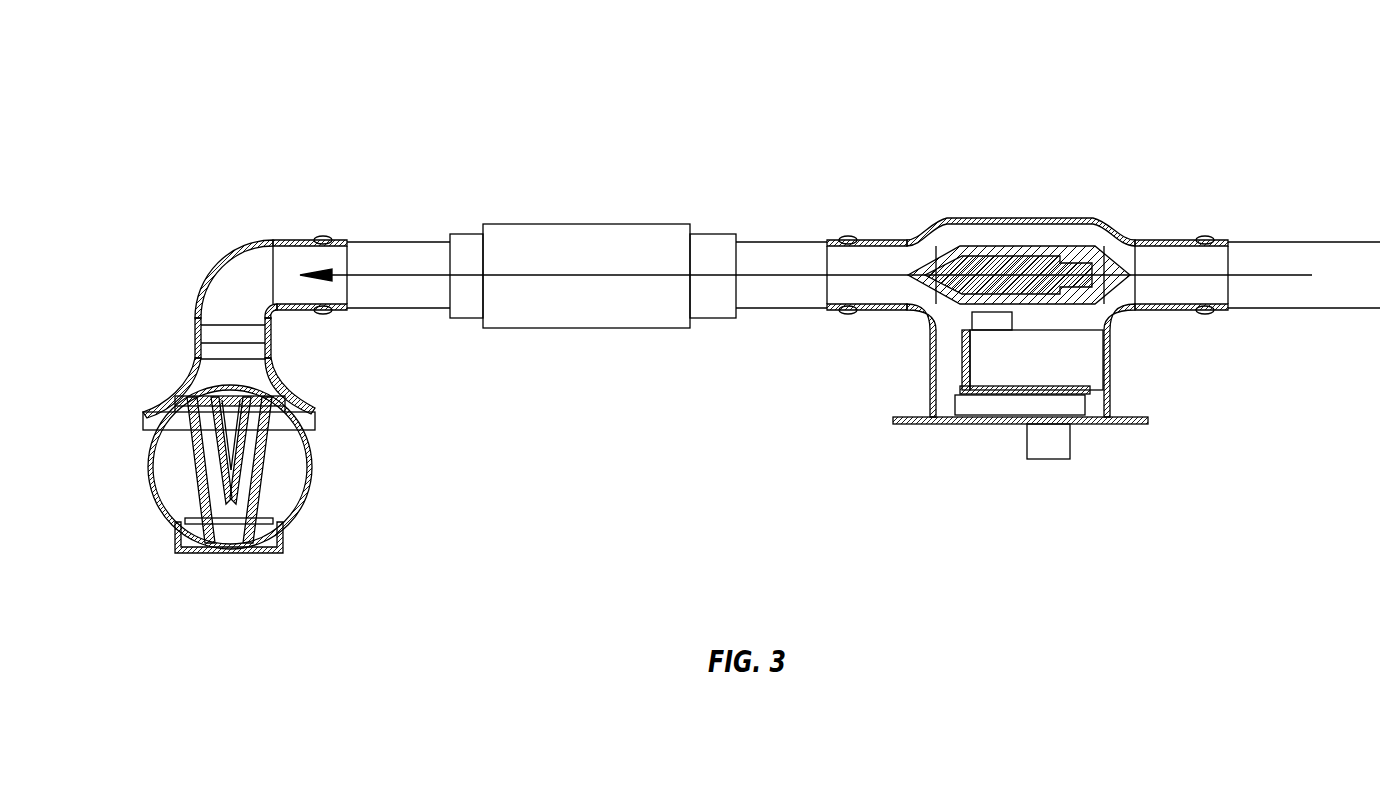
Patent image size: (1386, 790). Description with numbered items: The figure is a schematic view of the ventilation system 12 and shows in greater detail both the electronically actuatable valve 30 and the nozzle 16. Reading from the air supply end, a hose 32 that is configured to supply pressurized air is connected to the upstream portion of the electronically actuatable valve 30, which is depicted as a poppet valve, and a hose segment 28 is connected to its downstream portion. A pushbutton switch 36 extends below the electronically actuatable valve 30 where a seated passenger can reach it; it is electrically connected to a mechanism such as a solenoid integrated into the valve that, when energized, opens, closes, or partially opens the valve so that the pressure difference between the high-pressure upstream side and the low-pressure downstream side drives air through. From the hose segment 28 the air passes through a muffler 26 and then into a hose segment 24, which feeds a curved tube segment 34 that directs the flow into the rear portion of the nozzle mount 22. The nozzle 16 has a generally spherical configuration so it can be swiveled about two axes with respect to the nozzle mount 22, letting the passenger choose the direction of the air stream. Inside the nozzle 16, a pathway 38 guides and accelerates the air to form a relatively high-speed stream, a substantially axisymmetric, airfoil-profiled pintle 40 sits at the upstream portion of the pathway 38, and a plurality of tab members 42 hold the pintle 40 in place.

The ventilation system 12 is at (262, 88).
The nozzle 16 is at (150, 448).
The nozzle mount 22 is at (160, 380).
The hose segment 24 is at (400, 242).
The muffler 26 is at (585, 224).
The hose segment 28 is at (780, 242).
The electronically actuatable valve 30 is at (1000, 240).
The hose 32 is at (1312, 242).
The tube segment 34 is at (210, 282).
The pushbutton switch 36 is at (1048, 462).
The pathway 38 is at (250, 555).
The pintle 40 is at (225, 452).
The tab members 42 is at (180, 440).